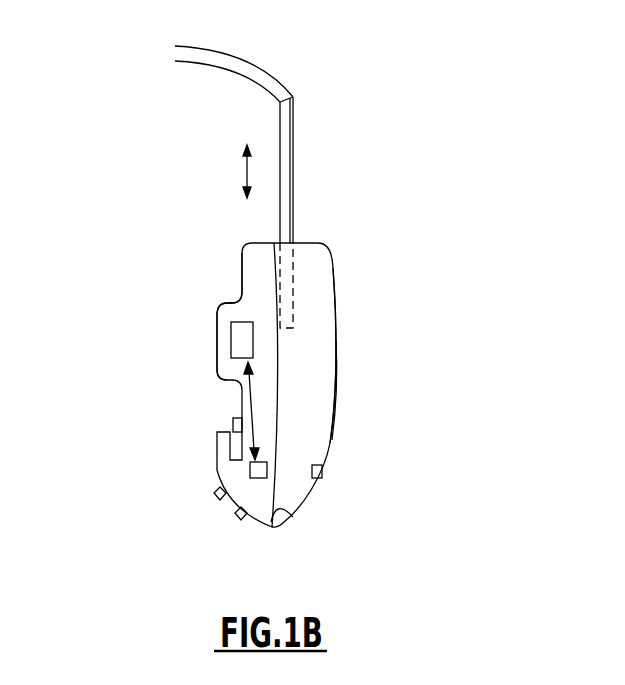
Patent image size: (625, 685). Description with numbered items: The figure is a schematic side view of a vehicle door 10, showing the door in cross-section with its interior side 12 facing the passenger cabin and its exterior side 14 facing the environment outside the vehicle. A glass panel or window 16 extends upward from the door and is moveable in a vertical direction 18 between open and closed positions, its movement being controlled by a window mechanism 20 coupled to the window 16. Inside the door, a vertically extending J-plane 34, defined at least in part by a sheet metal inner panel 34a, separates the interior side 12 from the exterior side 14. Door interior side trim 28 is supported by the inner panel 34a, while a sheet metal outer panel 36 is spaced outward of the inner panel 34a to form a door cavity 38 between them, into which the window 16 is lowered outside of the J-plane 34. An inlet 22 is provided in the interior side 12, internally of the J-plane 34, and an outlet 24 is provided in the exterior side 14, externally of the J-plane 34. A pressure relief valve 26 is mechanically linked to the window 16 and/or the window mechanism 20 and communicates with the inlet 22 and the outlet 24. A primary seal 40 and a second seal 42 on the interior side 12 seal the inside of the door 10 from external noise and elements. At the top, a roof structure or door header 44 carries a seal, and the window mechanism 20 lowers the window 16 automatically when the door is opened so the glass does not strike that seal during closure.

The door 10 is at (360, 430).
The interior side 12 is at (240, 270).
The exterior side 14 is at (323, 275).
The window 16 is at (290, 180).
The vertical direction 18 is at (242, 165).
The window mechanism 20 is at (240, 343).
The inlet 22 is at (236, 422).
The outlet 24 is at (322, 472).
The pressure relief valve 26 is at (250, 470).
The door interior side trim 28 is at (217, 315).
The J-plane 34 is at (278, 390).
The sheet metal inner panel 34a is at (292, 522).
The sheet metal outer panel 36 is at (332, 377).
The door cavity 38 is at (300, 413).
The primary seal 40 is at (237, 516).
The second seal 42 is at (212, 500).
The roof structure/door header 44 is at (255, 72).